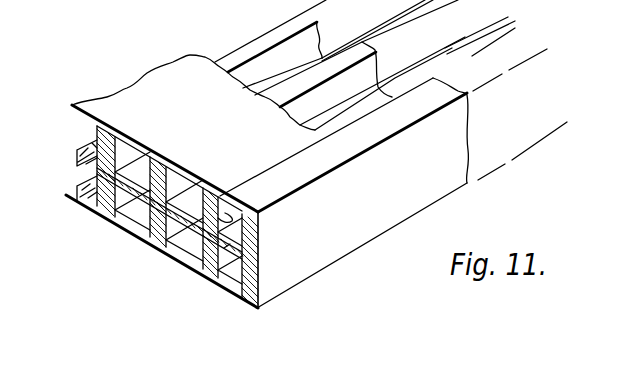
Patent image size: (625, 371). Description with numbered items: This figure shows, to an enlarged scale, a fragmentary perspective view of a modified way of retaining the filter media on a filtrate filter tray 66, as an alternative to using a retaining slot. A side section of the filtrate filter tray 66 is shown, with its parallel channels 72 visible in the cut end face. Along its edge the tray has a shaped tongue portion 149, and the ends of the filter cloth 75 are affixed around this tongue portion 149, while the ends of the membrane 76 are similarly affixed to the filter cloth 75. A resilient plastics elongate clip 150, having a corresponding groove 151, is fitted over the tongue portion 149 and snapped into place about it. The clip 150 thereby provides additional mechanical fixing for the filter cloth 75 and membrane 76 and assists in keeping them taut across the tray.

The filtrate filter tray 66 is at (155, 258).
The channels 72 is at (193, 252).
The filter cloth 75 is at (78, 123).
The membrane 76 is at (128, 88).
The tongue portion 149 is at (224, 248).
The clip 150 is at (327, 262).
The groove 151 is at (225, 212).